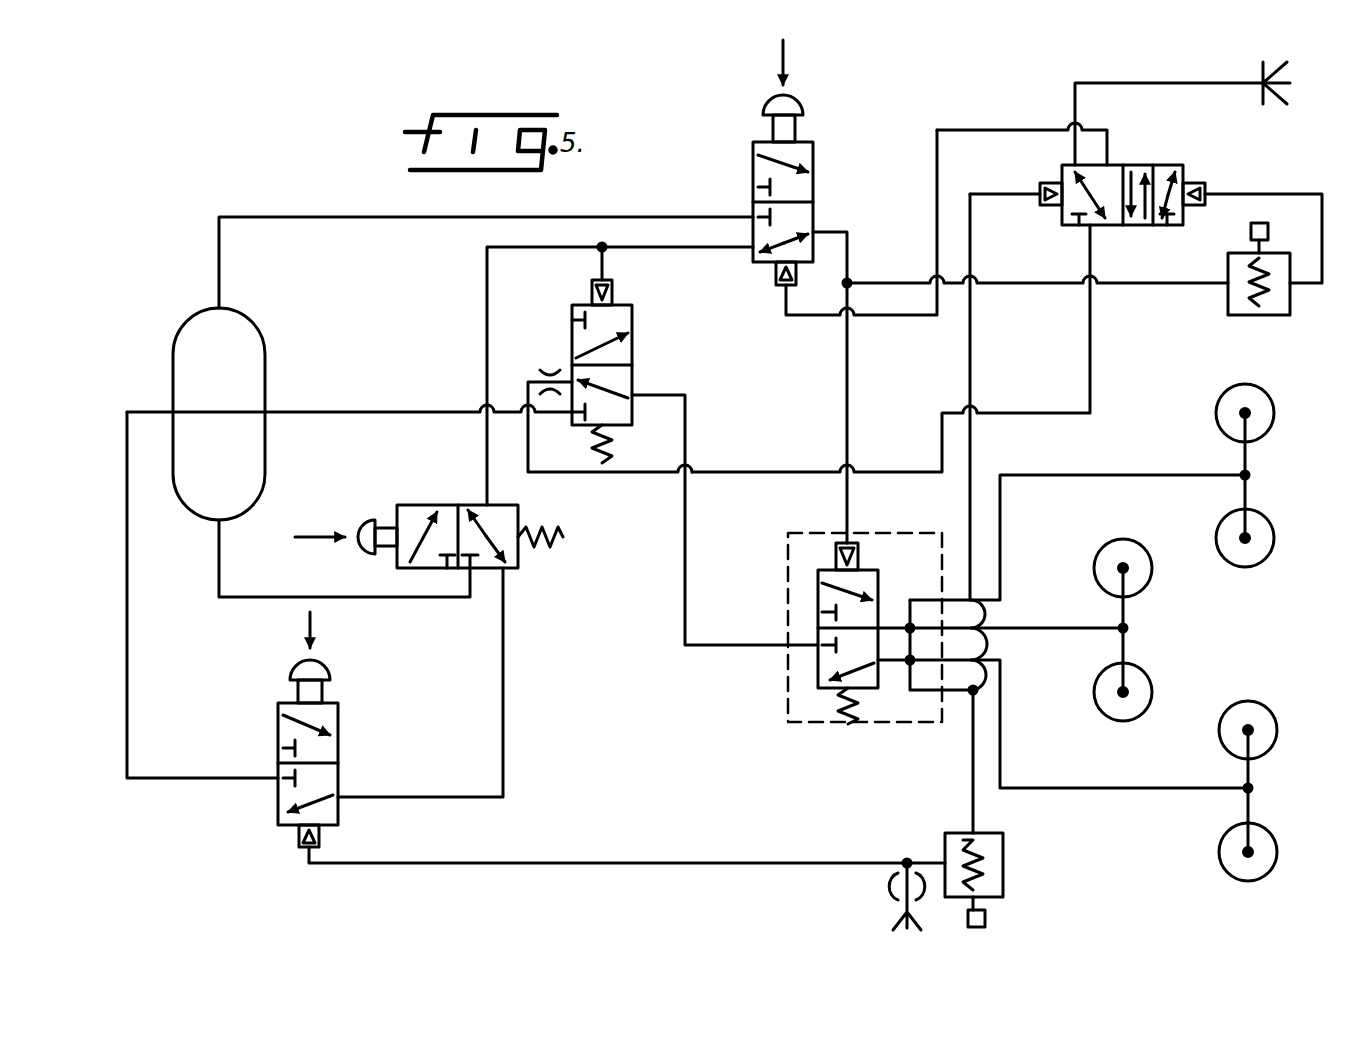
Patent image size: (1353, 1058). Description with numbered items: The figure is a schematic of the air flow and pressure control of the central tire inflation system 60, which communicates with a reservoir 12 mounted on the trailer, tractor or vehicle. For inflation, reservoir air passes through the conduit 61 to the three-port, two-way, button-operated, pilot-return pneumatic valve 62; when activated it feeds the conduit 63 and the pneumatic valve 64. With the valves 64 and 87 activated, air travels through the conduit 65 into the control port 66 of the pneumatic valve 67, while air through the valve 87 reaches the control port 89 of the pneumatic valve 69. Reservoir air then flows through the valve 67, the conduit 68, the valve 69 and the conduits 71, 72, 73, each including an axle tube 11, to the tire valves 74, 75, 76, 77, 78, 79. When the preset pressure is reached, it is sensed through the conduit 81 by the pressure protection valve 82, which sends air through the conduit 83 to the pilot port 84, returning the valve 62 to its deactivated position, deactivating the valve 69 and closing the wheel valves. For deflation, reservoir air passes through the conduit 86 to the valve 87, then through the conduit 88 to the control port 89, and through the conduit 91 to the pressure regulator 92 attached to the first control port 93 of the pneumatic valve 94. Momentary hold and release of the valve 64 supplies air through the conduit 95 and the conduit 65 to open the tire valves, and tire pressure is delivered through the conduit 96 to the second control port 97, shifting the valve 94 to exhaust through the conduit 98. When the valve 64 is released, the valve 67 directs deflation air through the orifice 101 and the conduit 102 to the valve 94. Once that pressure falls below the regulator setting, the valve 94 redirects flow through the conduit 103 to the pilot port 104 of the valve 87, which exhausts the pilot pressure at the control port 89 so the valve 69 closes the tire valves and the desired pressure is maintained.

The axle tube 11 is at (1250, 458).
The reservoir 12 is at (185, 330).
The central tire inflation system 60 is at (326, 195).
The conduit 61 is at (127, 580).
The pneumatic valve 62 is at (342, 748).
The conduit 63 is at (505, 686).
The pneumatic valve 64 is at (448, 505).
The conduit 65 is at (485, 318).
The control port 66 is at (614, 292).
The pneumatic valve 67 is at (635, 357).
The conduit 68 is at (688, 582).
The pneumatic valve 69 is at (818, 662).
The conduit 71 is at (1002, 522).
The conduit 72 is at (1085, 626).
The conduit 73 is at (1128, 786).
The tire valve 74 is at (1218, 420).
The tire valve 75 is at (1216, 538).
The tire valve 76 is at (1152, 578).
The tire valve 77 is at (1152, 688).
The tire valve 78 is at (1242, 704).
The tire valve 79 is at (1220, 858).
The conduit 81 is at (972, 774).
The pressure protection valve 82 is at (1005, 858).
The conduit 83 is at (628, 862).
The pilot port 84 is at (298, 836).
The conduit 86 is at (397, 215).
The pneumatic valve 87 is at (816, 188).
The conduit 88 is at (850, 405).
The control port 89 is at (862, 558).
The conduit 91 is at (1048, 290).
The pressure regulator 92 is at (1270, 318).
The first control port 93 is at (1210, 182).
The pneumatic valve 94 is at (1145, 228).
The conduit 95 is at (247, 598).
The conduit 96 is at (975, 376).
The second control port 97 is at (1045, 207).
The conduit 98 is at (1195, 82).
The orifice 101 is at (548, 376).
The conduit 102 is at (752, 472).
The conduit 103 is at (1030, 130).
The pilot port 104 is at (778, 285).